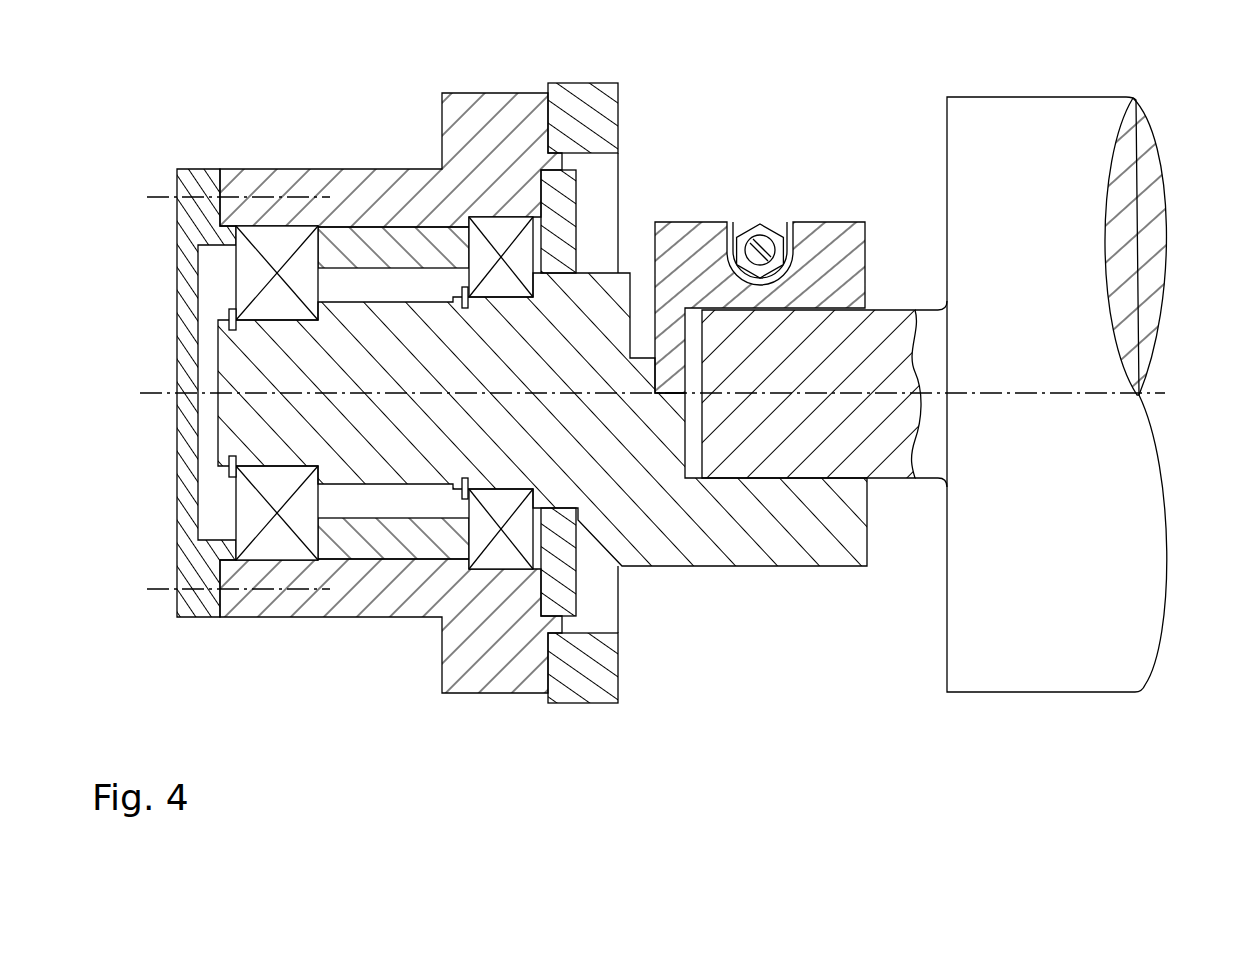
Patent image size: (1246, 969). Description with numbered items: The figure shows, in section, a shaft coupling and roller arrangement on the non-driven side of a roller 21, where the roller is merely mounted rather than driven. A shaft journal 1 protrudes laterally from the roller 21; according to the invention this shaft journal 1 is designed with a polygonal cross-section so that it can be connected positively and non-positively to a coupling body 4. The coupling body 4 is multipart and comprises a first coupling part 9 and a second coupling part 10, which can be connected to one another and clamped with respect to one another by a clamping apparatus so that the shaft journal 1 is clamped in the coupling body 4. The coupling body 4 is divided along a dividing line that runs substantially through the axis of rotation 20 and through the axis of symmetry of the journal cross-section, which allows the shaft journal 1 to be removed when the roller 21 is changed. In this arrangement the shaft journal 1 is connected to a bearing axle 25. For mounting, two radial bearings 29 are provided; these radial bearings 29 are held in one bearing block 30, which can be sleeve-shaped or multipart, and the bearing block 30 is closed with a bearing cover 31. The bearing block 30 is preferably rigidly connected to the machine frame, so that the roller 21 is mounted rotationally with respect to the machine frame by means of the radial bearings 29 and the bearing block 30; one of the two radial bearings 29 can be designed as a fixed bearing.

The shaft journal 1 is at (868, 343).
The coupling body 4 is at (542, 427).
The first coupling part 9 is at (788, 510).
The second coupling part 10 is at (810, 268).
The axis of rotation 20 is at (1092, 394).
The roller 21 is at (1025, 628).
The bearing axle 25 is at (400, 440).
The radial bearings 29 is at (275, 540).
The bearing block 30 is at (497, 130).
The bearing cover 31 is at (203, 600).